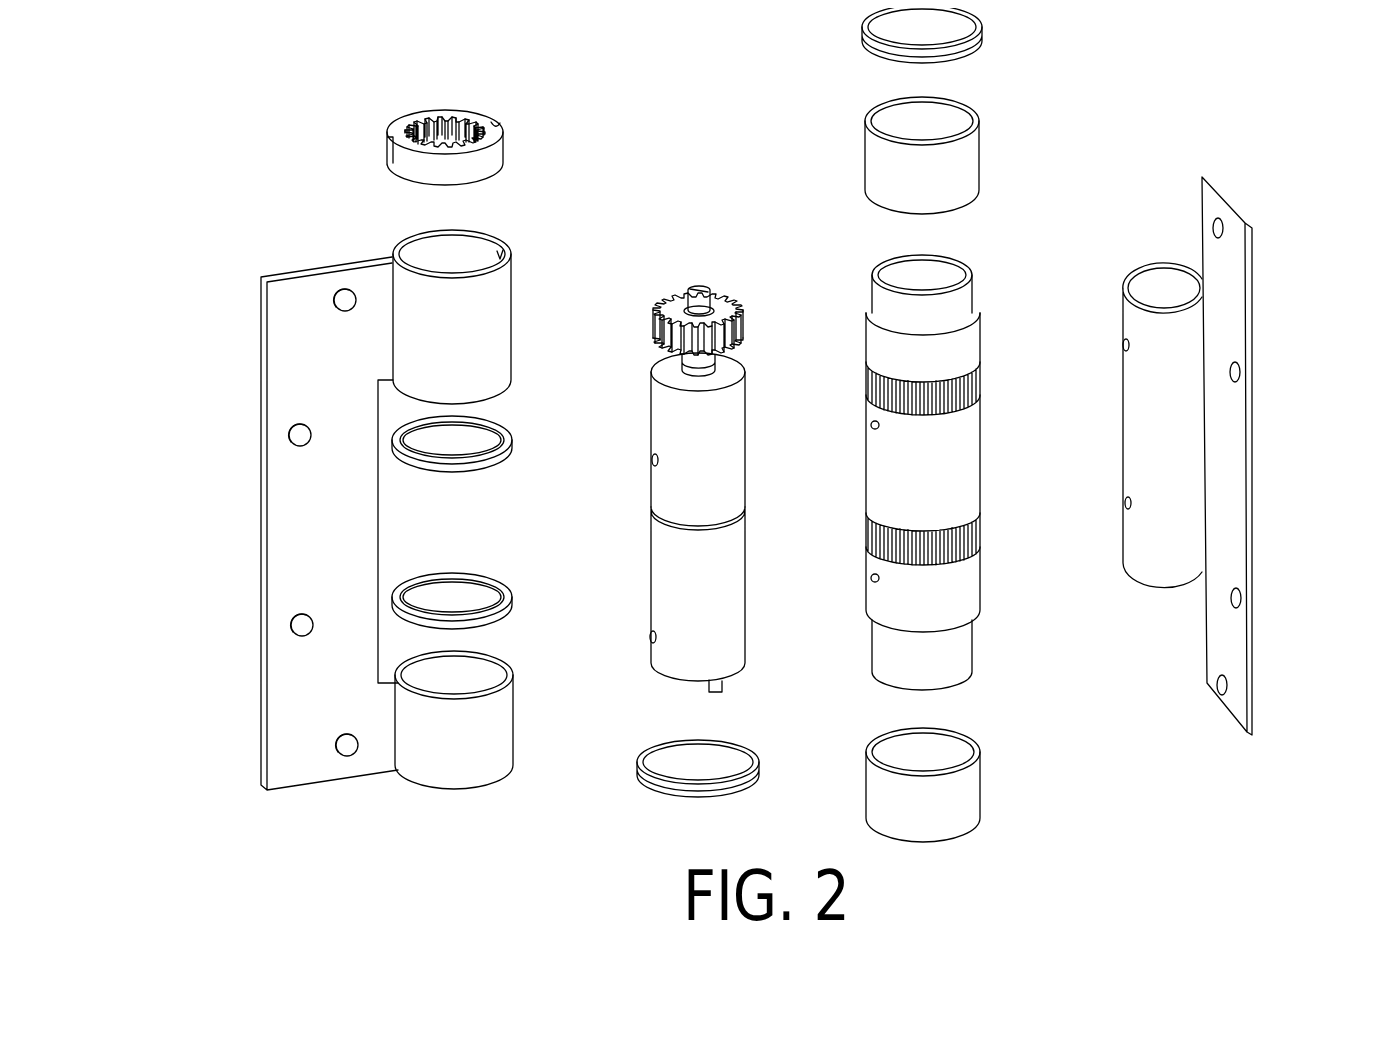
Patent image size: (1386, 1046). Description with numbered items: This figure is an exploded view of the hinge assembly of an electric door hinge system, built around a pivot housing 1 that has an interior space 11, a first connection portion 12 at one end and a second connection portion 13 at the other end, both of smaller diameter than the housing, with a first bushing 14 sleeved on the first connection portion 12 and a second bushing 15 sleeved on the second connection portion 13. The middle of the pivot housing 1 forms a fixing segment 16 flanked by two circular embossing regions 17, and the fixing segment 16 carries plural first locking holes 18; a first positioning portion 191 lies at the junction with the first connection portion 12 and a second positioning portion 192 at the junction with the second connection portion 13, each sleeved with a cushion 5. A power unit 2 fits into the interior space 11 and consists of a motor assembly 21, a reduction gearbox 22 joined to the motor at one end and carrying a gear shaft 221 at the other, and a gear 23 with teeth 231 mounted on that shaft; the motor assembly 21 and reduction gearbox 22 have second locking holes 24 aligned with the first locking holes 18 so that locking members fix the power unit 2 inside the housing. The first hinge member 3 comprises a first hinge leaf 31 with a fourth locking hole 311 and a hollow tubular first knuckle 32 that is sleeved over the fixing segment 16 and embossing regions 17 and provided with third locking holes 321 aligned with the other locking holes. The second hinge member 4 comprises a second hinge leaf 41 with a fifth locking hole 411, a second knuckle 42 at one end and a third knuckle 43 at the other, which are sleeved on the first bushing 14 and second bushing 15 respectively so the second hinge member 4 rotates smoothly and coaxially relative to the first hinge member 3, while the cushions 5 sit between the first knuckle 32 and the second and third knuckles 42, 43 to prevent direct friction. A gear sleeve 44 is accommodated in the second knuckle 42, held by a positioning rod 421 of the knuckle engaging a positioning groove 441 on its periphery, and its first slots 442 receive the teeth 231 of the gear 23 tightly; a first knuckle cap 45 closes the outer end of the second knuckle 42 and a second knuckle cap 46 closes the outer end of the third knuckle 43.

The pivot housing 1 is at (925, 452).
The interior space 11 is at (950, 275).
The first connection portion 12 is at (967, 238).
The second connection portion 13 is at (932, 679).
The first bushing 14 is at (880, 158).
The second bushing 15 is at (960, 810).
The fixing segment 16 is at (967, 480).
The circular embossing regions 17 is at (965, 385).
The first locking holes 18 is at (872, 428).
The first positioning portion 191 is at (980, 322).
The second positioning portion 192 is at (897, 627).
The power unit 2 is at (694, 436).
The motor assembly 21 is at (740, 562).
The reduction gearbox 22 is at (651, 484).
The gear shaft 221 is at (707, 298).
The gear 23 is at (741, 267).
The teeth 231 is at (677, 292).
The second locking holes 24 is at (652, 460).
The first hinge member 3 is at (1238, 427).
The first hinge leaf 31 is at (1286, 456).
The fourth locking hole 311 is at (1238, 380).
The first knuckle 32 is at (1153, 443).
The third locking holes 321 is at (1124, 342).
The second hinge member 4 is at (623, 442).
The second hinge leaf 41 is at (285, 467).
The fifth locking hole 411 is at (343, 288).
The second knuckle 42 is at (506, 279).
The positioning rod 421 is at (500, 255).
The third knuckle 43 is at (435, 778).
The gear sleeve 44 is at (451, 106).
The positioning groove 441 is at (498, 124).
The first slots 442 is at (451, 118).
The first knuckle cap 45 is at (950, 27).
The second knuckle cap 46 is at (665, 762).
The cushion 5 is at (493, 462).